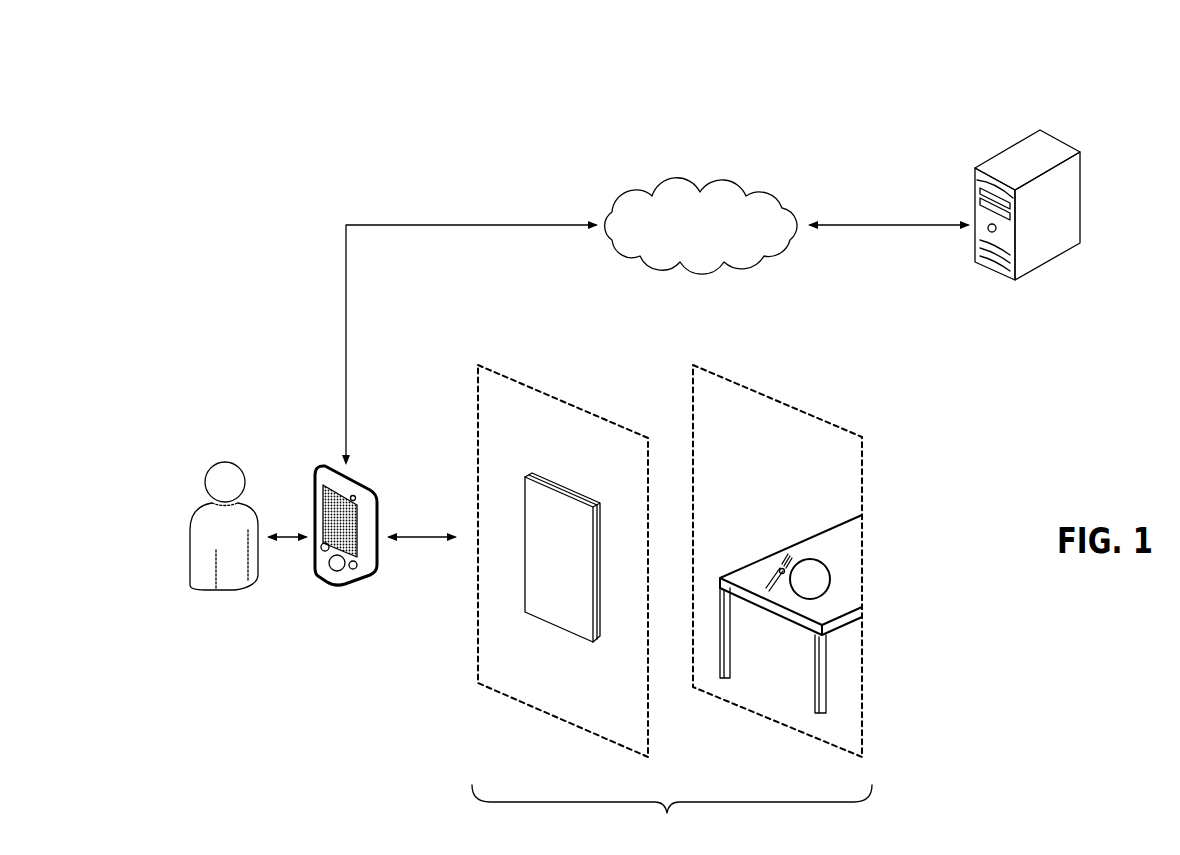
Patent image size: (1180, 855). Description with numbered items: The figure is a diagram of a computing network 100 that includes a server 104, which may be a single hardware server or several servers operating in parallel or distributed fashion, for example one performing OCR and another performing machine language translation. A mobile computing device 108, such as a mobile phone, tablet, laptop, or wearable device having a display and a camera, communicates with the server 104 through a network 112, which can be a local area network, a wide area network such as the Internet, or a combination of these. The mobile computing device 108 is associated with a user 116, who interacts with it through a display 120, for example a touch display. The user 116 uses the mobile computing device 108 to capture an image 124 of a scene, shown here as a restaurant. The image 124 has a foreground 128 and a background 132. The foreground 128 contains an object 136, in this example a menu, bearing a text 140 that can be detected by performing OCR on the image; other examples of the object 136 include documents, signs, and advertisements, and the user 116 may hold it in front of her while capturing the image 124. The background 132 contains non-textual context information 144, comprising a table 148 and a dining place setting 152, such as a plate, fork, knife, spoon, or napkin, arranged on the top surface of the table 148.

The computing network 100 is at (316, 132).
The server 104 is at (1057, 140).
The mobile computing device 108 is at (321, 533).
The network 112 is at (697, 189).
The user 116 is at (225, 462).
The display 120 is at (336, 503).
The image 124 is at (672, 815).
The foreground 128 is at (548, 715).
The background 132 is at (723, 698).
The object 136 is at (511, 579).
The text 140 is at (540, 536).
The non-textual context information 144 is at (829, 576).
The table 148 is at (826, 713).
The dining place setting 152 is at (829, 604).